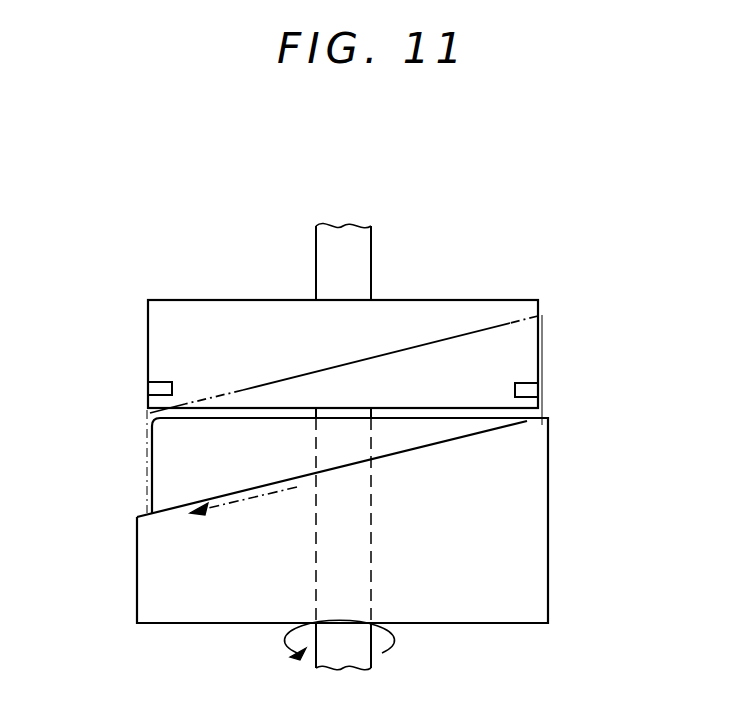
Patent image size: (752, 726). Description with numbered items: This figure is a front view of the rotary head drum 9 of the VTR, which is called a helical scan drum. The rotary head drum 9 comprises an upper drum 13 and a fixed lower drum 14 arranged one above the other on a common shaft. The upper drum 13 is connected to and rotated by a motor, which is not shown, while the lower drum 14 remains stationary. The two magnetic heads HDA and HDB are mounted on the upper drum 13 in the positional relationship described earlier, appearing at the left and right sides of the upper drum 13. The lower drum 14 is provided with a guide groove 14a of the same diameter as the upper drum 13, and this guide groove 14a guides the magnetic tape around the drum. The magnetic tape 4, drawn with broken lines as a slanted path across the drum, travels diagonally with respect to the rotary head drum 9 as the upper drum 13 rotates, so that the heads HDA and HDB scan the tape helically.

The rotary head drum 9 is at (548, 292).
The upper drum 13 is at (187, 315).
The magnetic tape 4 is at (271, 384).
The magnetic head HDA is at (152, 376).
The magnetic head HDB is at (523, 383).
The lower drum 14 is at (530, 452).
The guide groove 14a is at (433, 443).